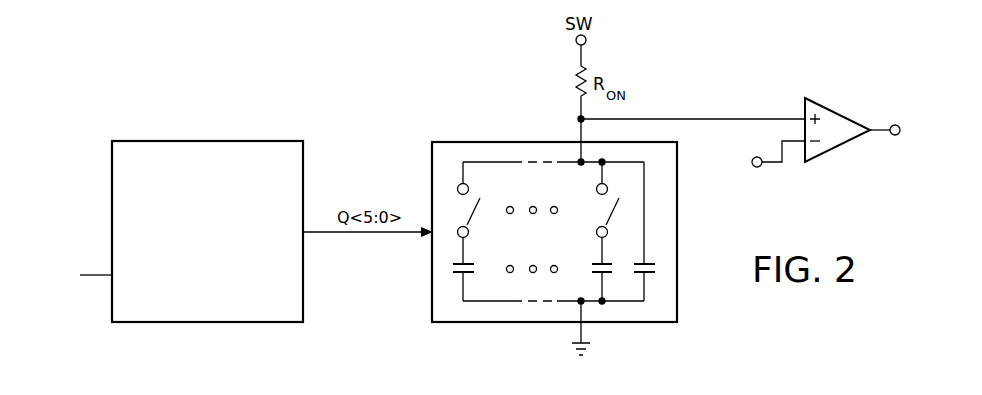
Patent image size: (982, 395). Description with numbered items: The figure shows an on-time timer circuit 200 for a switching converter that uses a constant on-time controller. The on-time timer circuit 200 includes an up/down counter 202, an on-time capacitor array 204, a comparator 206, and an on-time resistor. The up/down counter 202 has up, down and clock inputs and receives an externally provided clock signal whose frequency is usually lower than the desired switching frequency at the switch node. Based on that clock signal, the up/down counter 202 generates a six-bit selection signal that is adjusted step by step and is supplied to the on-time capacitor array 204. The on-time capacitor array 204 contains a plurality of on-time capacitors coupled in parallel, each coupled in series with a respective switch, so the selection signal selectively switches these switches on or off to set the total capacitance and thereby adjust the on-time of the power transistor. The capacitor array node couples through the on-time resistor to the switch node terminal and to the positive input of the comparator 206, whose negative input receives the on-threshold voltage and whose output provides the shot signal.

The on-time timer circuit 200 is at (323, 80).
The up/down counter 202 is at (207, 140).
The on-time capacitor array 204 is at (516, 138).
The comparator 206 is at (855, 100).